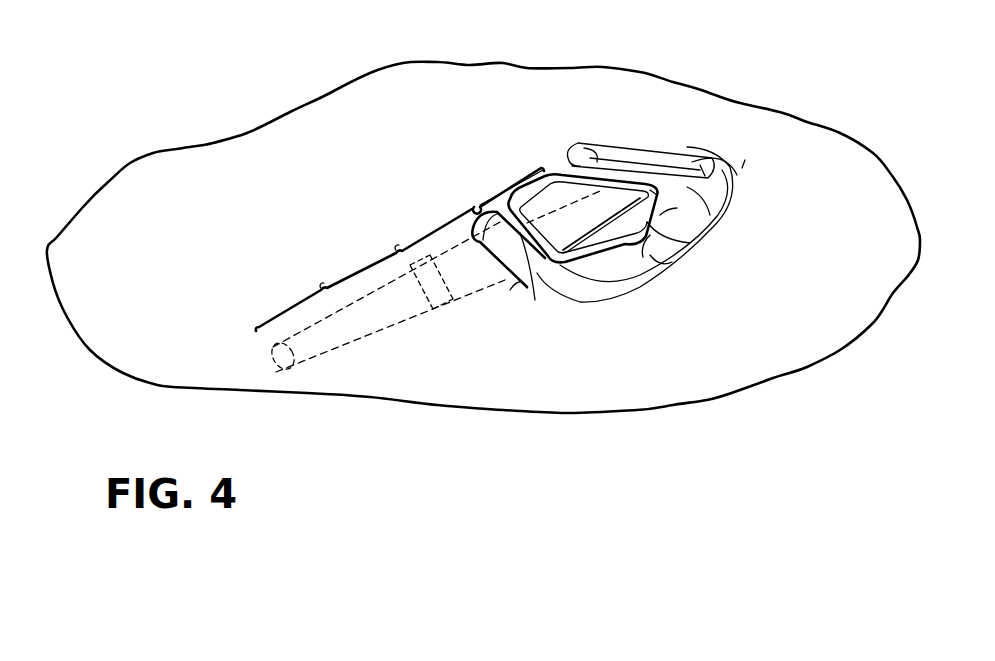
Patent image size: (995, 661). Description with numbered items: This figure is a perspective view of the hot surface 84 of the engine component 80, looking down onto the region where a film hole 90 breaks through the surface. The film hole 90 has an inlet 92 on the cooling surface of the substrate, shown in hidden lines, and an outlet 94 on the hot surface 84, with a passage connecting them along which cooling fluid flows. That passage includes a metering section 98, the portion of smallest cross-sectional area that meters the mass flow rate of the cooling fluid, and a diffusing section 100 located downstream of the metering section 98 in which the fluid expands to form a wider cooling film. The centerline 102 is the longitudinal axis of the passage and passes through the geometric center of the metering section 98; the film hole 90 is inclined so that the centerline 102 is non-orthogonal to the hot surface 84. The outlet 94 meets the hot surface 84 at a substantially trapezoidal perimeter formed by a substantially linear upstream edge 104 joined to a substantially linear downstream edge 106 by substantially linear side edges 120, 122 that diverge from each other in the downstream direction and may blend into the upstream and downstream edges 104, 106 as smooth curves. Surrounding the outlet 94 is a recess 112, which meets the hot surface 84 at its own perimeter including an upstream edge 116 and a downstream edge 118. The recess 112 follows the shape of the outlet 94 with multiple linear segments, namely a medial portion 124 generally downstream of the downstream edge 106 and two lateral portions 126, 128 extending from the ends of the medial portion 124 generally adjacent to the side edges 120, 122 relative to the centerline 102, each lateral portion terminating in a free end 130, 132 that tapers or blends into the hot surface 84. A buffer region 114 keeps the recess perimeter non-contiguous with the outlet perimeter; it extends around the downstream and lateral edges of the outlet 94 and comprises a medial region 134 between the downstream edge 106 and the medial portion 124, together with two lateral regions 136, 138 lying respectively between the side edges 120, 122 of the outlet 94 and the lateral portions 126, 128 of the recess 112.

The engine component 80 is at (345, 110).
The hot surface 84 is at (310, 173).
The film hole 90 is at (423, 318).
The inlet 92 is at (327, 357).
The outlet 94 is at (604, 210).
The metering section 98 is at (324, 284).
The diffusing section 100 is at (479, 204).
The centerline 102 is at (360, 327).
The upstream edge 104 is at (531, 165).
The downstream edge 106 is at (612, 285).
The recess 112 is at (747, 198).
The buffer region 114 is at (722, 163).
The upstream edge 116 is at (682, 240).
The downstream edge 118 is at (660, 262).
The side edge 120 is at (622, 172).
The side edge 122 is at (527, 290).
The medial portion 124 is at (643, 257).
The lateral portion 126 is at (688, 163).
The lateral portion 128 is at (497, 258).
The free end 130 is at (570, 146).
The free end 132 is at (481, 200).
The medial region 134 is at (713, 206).
The lateral region 136 is at (668, 187).
The lateral region 138 is at (535, 300).